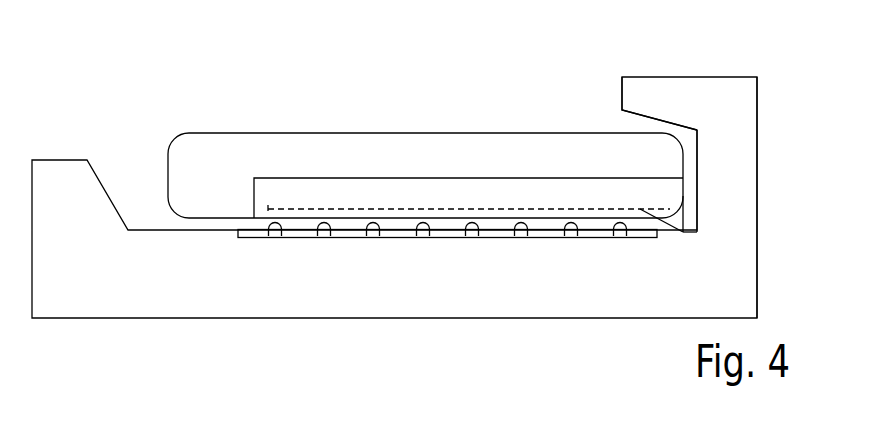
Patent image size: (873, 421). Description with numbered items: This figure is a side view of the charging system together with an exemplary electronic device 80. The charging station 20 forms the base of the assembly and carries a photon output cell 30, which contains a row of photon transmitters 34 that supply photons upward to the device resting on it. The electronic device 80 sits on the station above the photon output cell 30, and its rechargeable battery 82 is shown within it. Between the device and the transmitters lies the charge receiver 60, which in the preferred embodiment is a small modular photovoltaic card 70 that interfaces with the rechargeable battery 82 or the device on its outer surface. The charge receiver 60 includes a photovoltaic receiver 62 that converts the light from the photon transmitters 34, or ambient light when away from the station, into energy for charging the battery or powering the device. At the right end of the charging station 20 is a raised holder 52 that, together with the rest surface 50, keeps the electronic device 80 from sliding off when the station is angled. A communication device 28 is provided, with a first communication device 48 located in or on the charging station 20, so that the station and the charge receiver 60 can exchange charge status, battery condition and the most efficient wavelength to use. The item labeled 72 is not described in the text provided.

The charging station 20 is at (108, 283).
The communication device 28 is at (684, 180).
The photon output cell 30 is at (434, 232).
The photon transmitters 34 is at (275, 233).
The first communication device 48 is at (699, 208).
The rest surface 50 is at (737, 193).
The holder 52 is at (674, 97).
The charge receiver 60 is at (543, 213).
The photovoltaic receiver 62 is at (385, 210).
The photovoltaic card 70 is at (640, 209).
The seal 72 is at (700, 212).
The electronic device 80 is at (452, 158).
The rechargeable battery 82 is at (327, 190).